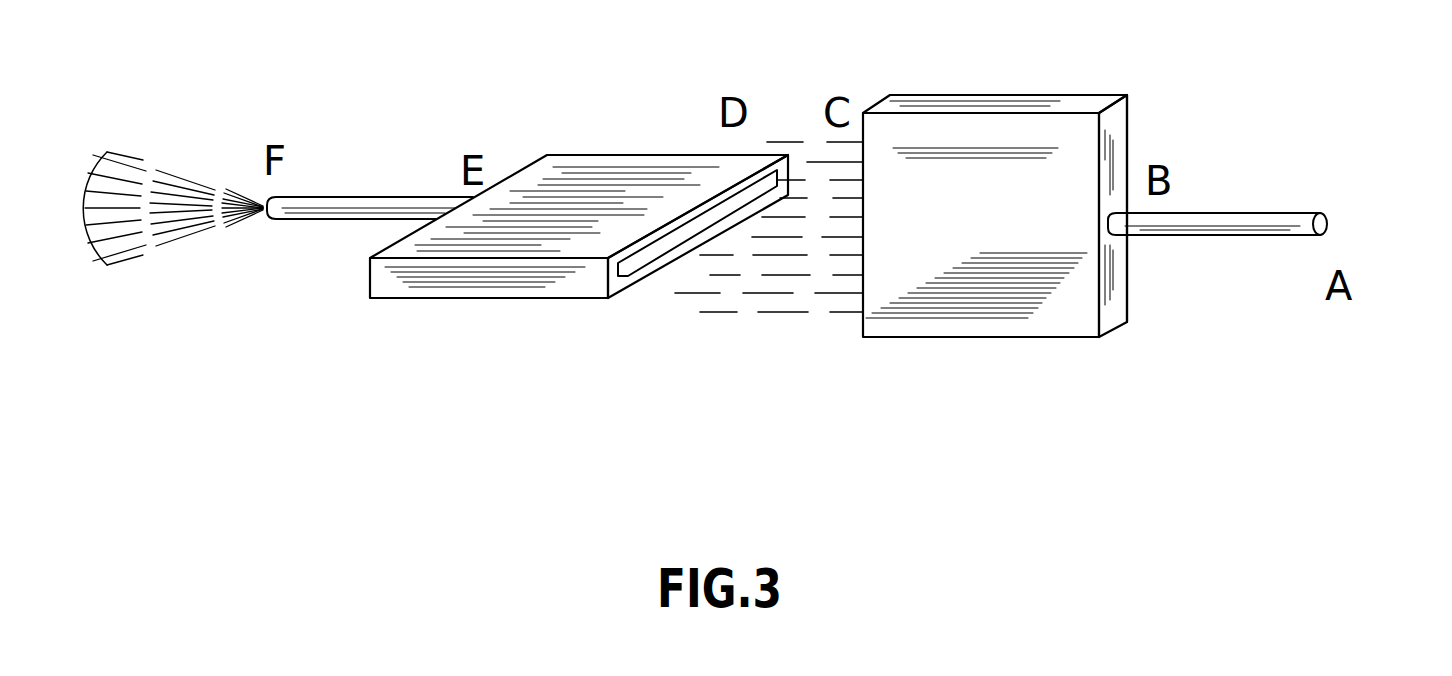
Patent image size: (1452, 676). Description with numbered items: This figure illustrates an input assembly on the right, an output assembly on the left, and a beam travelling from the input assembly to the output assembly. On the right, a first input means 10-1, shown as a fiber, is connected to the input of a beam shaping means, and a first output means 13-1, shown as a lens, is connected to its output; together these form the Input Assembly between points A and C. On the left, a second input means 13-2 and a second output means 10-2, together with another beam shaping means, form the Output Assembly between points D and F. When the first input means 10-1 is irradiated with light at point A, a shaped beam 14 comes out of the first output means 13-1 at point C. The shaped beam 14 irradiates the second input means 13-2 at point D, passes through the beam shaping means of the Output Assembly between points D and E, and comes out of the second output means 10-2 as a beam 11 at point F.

The beam 11 is at (135, 157).
The second output means 10-2 is at (305, 196).
The first input means 10-1 is at (1244, 213).
The second input means 13-2 is at (627, 270).
The first output means 13-1 is at (858, 315).
The shaped beam 14 is at (703, 315).